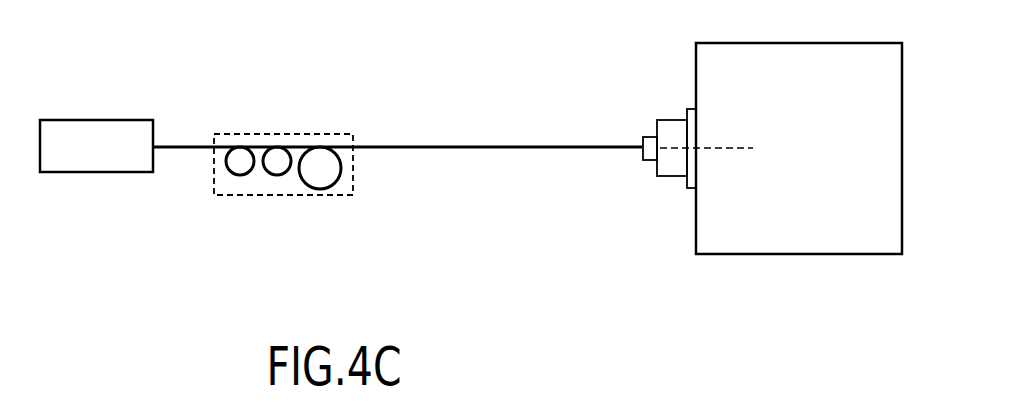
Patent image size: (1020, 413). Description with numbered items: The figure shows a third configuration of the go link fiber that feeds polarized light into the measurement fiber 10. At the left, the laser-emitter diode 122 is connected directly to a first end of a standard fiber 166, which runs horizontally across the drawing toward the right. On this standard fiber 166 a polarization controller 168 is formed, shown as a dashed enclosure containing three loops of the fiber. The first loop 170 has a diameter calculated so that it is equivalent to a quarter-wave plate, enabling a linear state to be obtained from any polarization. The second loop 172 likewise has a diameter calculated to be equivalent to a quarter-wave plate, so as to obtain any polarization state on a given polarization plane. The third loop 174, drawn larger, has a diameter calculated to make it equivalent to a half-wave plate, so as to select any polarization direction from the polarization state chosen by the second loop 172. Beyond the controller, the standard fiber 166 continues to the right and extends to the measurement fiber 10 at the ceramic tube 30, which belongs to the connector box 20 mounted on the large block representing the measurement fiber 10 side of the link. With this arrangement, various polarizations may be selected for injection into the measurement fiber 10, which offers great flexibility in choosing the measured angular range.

The measurement fiber 10 is at (718, 148).
The connector box 20 is at (668, 178).
The ceramic tube 30 is at (648, 135).
The laser-emitter diode 122 is at (112, 143).
The standard fiber 166 is at (523, 152).
The polarization controller 168 is at (343, 133).
The first loop 170 is at (240, 178).
The second loop 172 is at (273, 180).
The third loop 174 is at (323, 175).